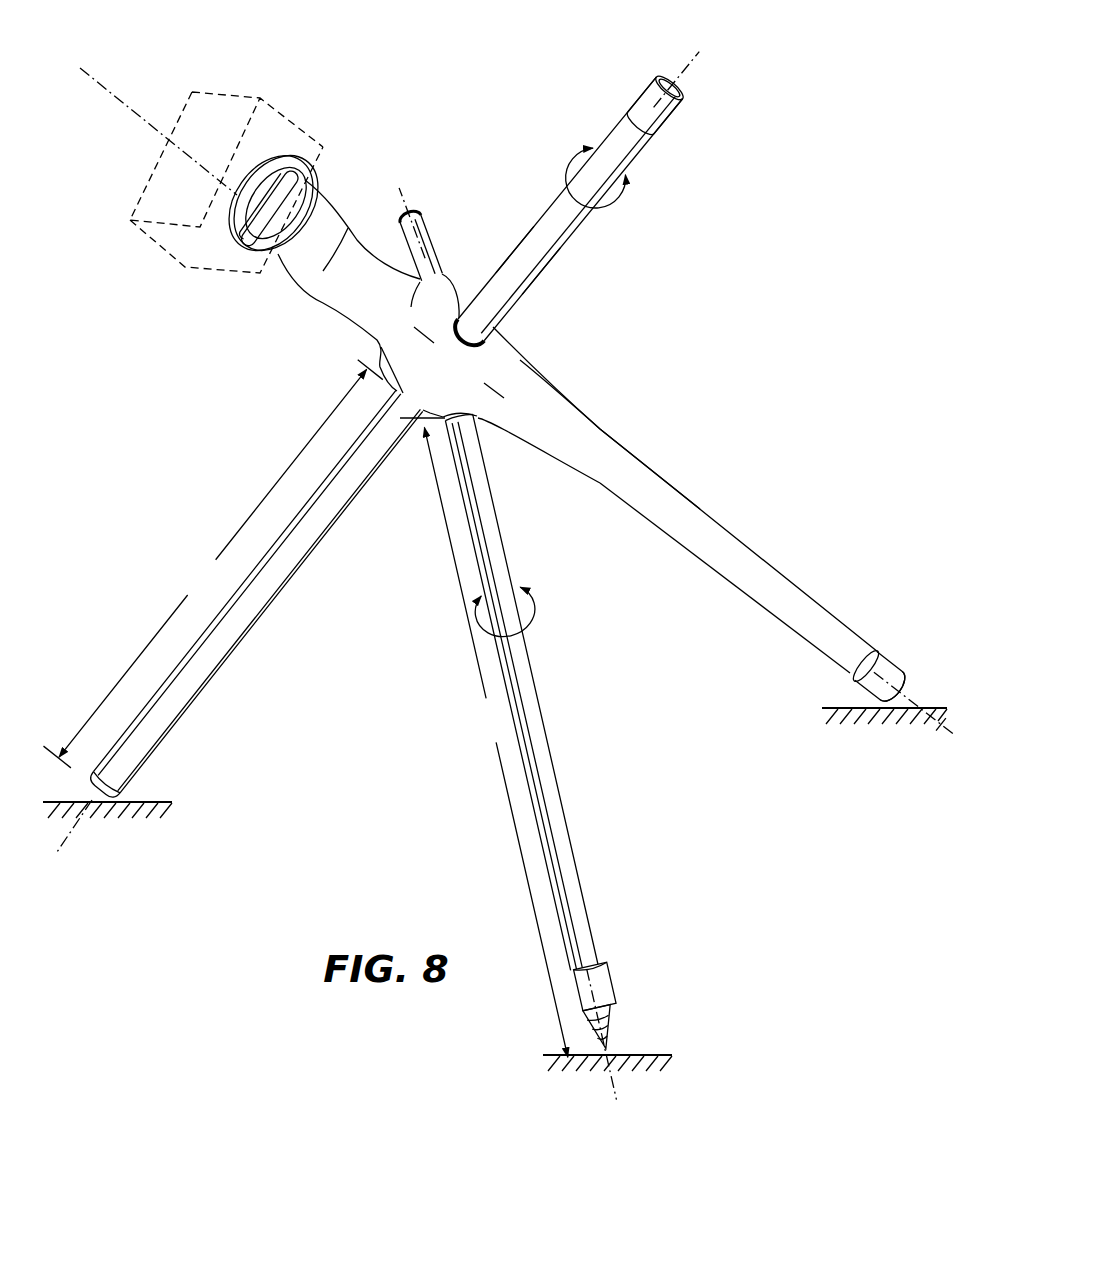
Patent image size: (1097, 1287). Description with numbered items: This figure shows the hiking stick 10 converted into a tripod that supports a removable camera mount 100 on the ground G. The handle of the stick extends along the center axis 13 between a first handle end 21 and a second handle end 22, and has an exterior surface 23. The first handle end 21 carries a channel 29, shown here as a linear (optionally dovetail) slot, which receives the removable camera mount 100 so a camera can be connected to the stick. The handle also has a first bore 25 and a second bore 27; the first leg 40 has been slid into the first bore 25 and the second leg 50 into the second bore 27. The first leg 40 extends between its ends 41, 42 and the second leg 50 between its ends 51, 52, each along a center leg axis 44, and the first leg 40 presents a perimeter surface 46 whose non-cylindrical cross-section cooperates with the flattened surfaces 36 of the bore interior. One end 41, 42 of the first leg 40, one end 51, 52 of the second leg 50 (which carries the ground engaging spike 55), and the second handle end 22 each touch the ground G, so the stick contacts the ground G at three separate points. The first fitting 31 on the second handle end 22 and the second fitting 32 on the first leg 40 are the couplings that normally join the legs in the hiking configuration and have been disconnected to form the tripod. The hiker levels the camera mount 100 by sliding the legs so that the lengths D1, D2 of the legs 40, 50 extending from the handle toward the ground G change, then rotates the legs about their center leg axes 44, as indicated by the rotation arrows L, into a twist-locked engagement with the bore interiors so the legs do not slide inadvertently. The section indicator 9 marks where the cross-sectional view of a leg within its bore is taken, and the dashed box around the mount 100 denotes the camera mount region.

The hiking stick 10 is at (771, 290).
The center axis 13 is at (118, 100).
The first handle end 21 is at (294, 148).
The second handle end 22 is at (888, 650).
The exterior surface 23 is at (578, 410).
The first bore 25 is at (492, 354).
The second bore 27 is at (484, 418).
The channel 29 is at (250, 222).
The first fitting 31 is at (928, 688).
The second fitting 32 is at (661, 113).
The flattened surfaces 36 is at (610, 440).
The first leg 40 is at (572, 218).
The end of first leg 41 is at (197, 720).
The end of first leg 42 is at (630, 78).
The center leg axes 44 is at (399, 189).
The perimeter surface 46 is at (515, 252).
The second leg 50 is at (576, 836).
The end of second leg 51 is at (624, 961).
The end of second leg 52 is at (434, 202).
The ground engaging spike 55 is at (616, 1012).
The removable camera mount 100 is at (150, 172).
The section line 9 is at (429, 332).
The length of first leg D1 is at (212, 563).
The length of second leg D2 is at (484, 737).
The rotation arrows L is at (626, 183).
The ground G is at (150, 801).